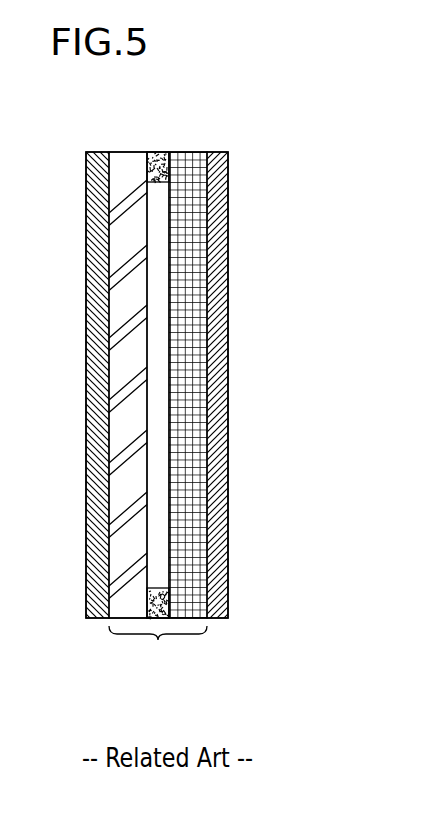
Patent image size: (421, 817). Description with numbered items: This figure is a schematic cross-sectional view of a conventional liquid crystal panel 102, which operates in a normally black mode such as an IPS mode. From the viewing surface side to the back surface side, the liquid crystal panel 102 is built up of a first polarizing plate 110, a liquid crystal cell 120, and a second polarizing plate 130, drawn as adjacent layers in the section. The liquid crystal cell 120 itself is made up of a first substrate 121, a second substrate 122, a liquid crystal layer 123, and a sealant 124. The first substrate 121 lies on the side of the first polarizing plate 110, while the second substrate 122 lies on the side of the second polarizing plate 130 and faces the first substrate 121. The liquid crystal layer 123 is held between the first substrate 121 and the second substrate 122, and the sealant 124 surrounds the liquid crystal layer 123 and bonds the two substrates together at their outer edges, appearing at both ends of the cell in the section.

The liquid crystal panel 102 is at (338, 96).
The first polarizing plate 110 is at (97, 620).
The liquid crystal cell 120 is at (158, 652).
The first substrate 121 is at (127, 168).
The second substrate 122 is at (193, 167).
The liquid crystal layer 123 is at (158, 222).
The sealant 124 is at (155, 158).
The second polarizing plate 130 is at (215, 620).